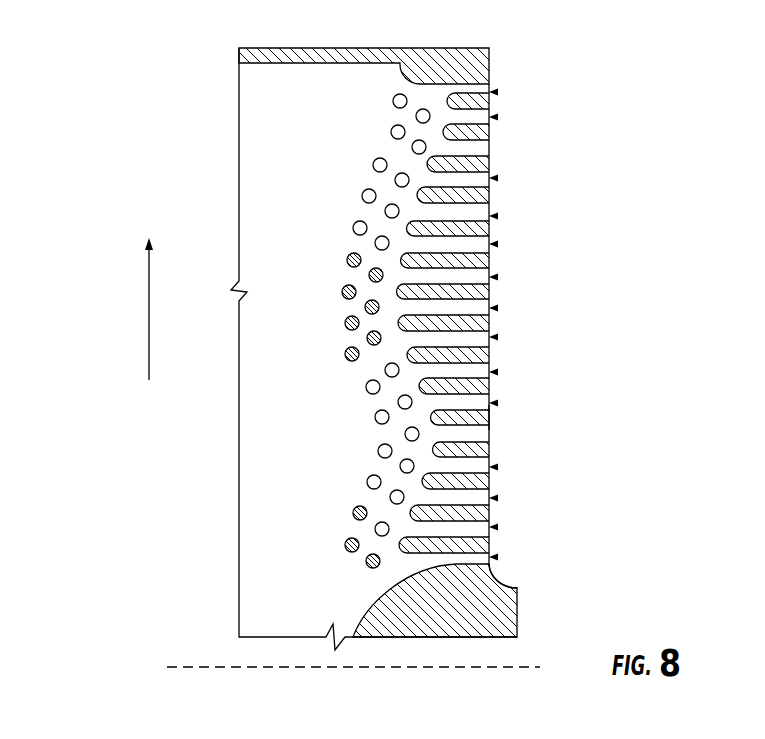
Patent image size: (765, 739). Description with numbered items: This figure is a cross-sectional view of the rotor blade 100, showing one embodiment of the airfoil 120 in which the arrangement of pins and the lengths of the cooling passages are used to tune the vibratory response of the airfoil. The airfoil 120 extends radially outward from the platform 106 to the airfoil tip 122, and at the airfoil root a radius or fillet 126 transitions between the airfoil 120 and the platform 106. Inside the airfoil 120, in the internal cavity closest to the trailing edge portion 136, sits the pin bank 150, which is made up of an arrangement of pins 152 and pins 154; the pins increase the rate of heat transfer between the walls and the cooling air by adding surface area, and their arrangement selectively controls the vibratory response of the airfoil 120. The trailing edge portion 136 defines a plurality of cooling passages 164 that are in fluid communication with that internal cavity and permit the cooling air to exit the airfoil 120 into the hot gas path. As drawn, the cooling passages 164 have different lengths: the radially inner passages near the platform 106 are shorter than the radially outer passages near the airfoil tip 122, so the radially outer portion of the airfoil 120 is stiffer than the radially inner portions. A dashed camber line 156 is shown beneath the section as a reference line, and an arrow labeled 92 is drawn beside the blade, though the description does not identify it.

The rotor blade 100 is at (66, 50).
The flow direction 92 is at (149, 318).
The platform 106 is at (518, 628).
The airfoil 120 is at (490, 167).
The airfoil tip 122 is at (401, 48).
The fillet 126 is at (498, 580).
The trailing edge portion 136 is at (490, 421).
The pin bank 150 is at (298, 351).
The pins 152 is at (343, 290).
The pins 154 is at (392, 129).
The camber line 156 is at (288, 670).
The cooling passages 164 is at (497, 117).